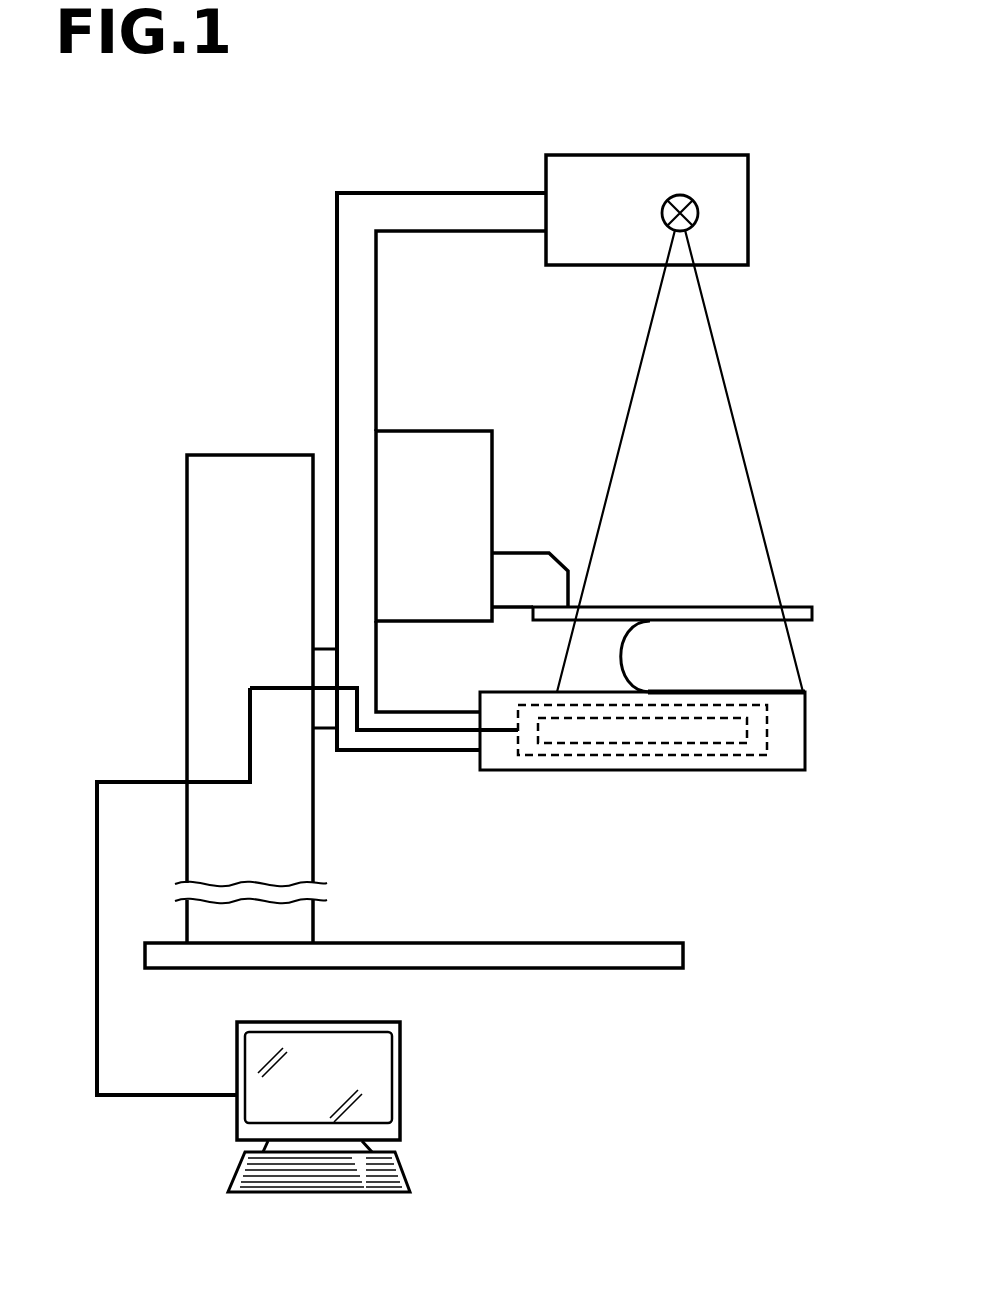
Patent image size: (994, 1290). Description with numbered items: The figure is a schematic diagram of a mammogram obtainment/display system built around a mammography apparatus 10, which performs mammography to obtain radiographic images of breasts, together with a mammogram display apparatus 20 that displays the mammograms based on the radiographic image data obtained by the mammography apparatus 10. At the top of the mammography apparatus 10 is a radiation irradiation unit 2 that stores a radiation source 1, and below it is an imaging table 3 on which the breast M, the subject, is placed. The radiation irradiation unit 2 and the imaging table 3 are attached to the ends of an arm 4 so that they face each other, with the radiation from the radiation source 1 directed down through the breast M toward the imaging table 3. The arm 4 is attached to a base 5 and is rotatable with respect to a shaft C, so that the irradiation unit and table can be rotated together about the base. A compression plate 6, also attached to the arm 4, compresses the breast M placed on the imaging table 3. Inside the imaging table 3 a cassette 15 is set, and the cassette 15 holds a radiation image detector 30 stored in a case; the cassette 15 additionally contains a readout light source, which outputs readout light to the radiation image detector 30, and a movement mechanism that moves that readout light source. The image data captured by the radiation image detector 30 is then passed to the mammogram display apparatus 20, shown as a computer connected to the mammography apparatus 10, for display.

The mammography apparatus 10 is at (786, 92).
The radiation source 1 is at (680, 195).
The radiation irradiation unit 2 is at (727, 207).
The arm 4 is at (353, 205).
The base 5 is at (197, 521).
The compression plate 6 is at (681, 613).
The breast M is at (640, 663).
The imaging table 3 is at (780, 733).
The cassette 15 is at (608, 756).
The radiation image detector 30 is at (710, 745).
The shaft C is at (330, 731).
The mammogram display apparatus 20 is at (400, 1045).